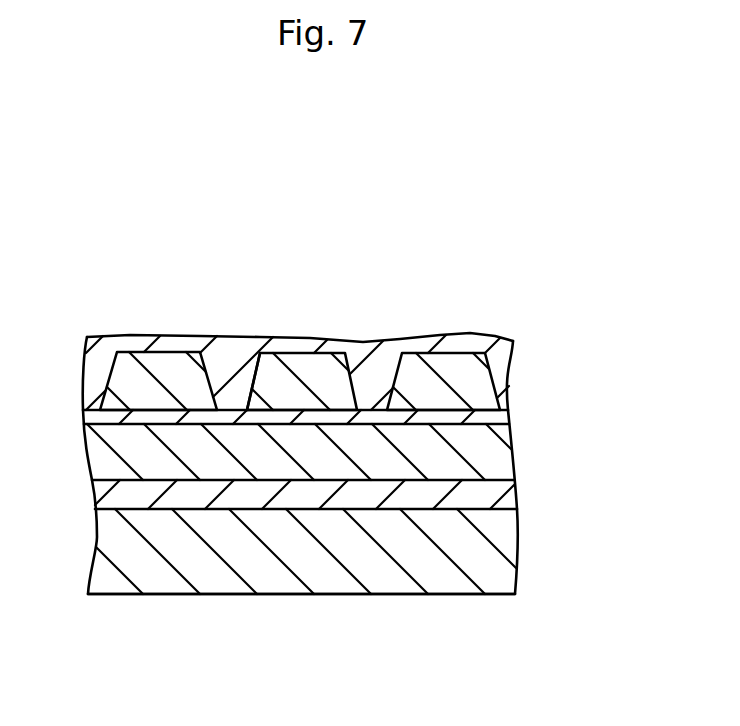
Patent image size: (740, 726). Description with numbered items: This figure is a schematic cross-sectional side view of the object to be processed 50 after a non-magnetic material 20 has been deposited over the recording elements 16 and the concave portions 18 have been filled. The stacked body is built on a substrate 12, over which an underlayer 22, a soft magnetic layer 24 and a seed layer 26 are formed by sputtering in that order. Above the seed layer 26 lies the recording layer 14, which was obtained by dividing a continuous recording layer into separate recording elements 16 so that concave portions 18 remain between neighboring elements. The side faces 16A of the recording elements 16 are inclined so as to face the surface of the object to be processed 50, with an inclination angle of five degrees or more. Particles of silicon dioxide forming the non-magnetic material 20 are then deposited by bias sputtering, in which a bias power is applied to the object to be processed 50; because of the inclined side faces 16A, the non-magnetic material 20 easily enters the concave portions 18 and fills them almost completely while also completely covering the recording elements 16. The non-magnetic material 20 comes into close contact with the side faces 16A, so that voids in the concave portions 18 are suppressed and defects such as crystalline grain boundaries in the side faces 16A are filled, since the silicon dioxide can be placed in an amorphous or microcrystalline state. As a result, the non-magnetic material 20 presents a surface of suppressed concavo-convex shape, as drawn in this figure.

The object to be processed 50 is at (323, 190).
The substrate 12 is at (520, 543).
The recording layer 14 is at (517, 382).
The recording elements 16 is at (302, 365).
The side faces 16A is at (253, 376).
The concave portions 18 is at (375, 377).
The non-magnetic material 20 is at (473, 337).
The underlayer 22 is at (520, 498).
The soft magnetic layer 24 is at (512, 460).
The seed layer 26 is at (508, 418).